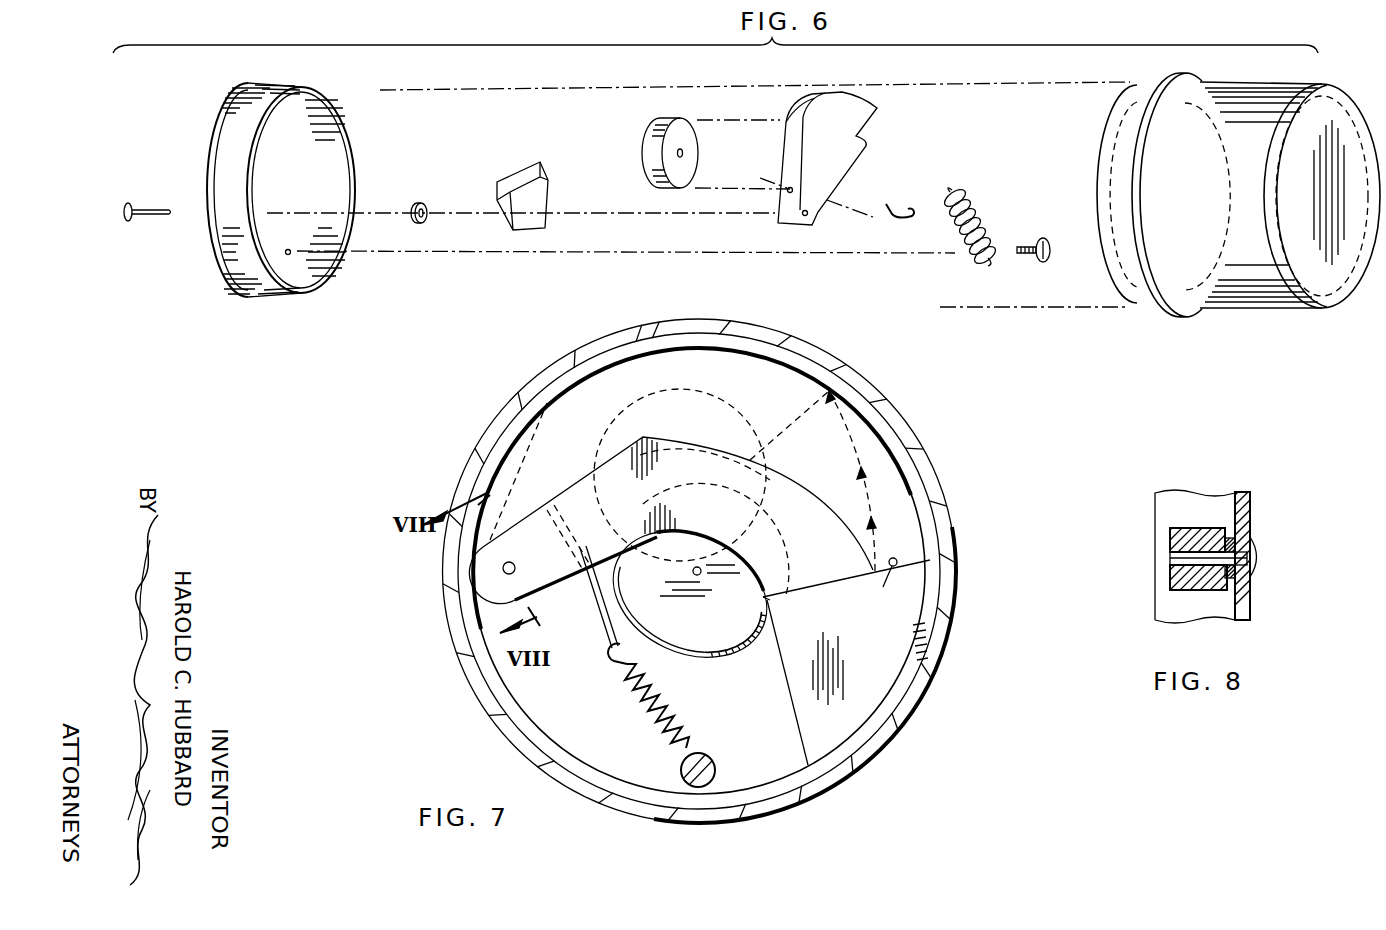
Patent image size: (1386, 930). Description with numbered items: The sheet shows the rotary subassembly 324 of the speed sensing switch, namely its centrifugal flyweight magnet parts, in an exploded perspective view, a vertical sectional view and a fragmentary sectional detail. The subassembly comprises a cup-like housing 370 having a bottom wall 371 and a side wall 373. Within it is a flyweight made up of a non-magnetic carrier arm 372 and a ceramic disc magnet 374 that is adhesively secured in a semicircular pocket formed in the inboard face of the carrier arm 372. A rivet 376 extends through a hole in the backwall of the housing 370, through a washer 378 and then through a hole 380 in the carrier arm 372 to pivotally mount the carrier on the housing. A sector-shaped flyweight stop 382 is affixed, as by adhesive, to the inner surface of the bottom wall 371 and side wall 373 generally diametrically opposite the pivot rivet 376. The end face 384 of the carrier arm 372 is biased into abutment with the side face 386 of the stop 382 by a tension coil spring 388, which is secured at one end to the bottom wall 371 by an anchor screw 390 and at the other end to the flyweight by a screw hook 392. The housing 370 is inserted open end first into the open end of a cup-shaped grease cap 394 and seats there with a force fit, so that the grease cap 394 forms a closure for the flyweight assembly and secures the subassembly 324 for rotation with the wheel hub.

In FIG. 7, the rotary subassembly 324 is at (925, 433).
In FIG. 6, the cup-like housing 370 is at (250, 288).
In FIG. 7, the cup-like housing 370 is at (510, 425).
In FIG. 8, the cup-like housing 370 is at (1153, 600).
In FIG. 7, the bottom wall 371 is at (782, 768).
In FIG. 8, the bottom wall 371 is at (1246, 585).
In FIG. 6, the carrier arm 372 is at (835, 142).
In FIG. 7, the carrier arm 372 is at (775, 478).
In FIG. 8, the carrier arm 372 is at (1170, 541).
In FIG. 7, the side wall 373 is at (580, 382).
In FIG. 6, the ceramic disc magnet 374 is at (698, 153).
In FIG. 7, the ceramic disc magnet 374 is at (682, 389).
In FIG. 6, the rivet 376 is at (150, 220).
In FIG. 7, the rivet 376 is at (503, 571).
In FIG. 8, the rivet 376 is at (1170, 560).
In FIG. 6, the washer 378 is at (424, 204).
In FIG. 8, the washer 378 is at (1232, 545).
In FIG. 6, the hole 380 is at (808, 214).
In FIG. 6, the flyweight stop 382 is at (545, 175).
In FIG. 7, the flyweight stop 382 is at (897, 647).
In FIG. 7, the end face 384 is at (815, 593).
In FIG. 7, the side face 386 is at (891, 587).
In FIG. 6, the tension coil spring 388 is at (975, 205).
In FIG. 7, the tension coil spring 388 is at (645, 690).
In FIG. 6, the anchor screw 390 is at (1040, 240).
In FIG. 7, the anchor screw 390 is at (710, 760).
In FIG. 6, the screw hook 392 is at (893, 210).
In FIG. 7, the screw hook 392 is at (602, 645).
In FIG. 6, the grease cap 394 is at (1222, 307).